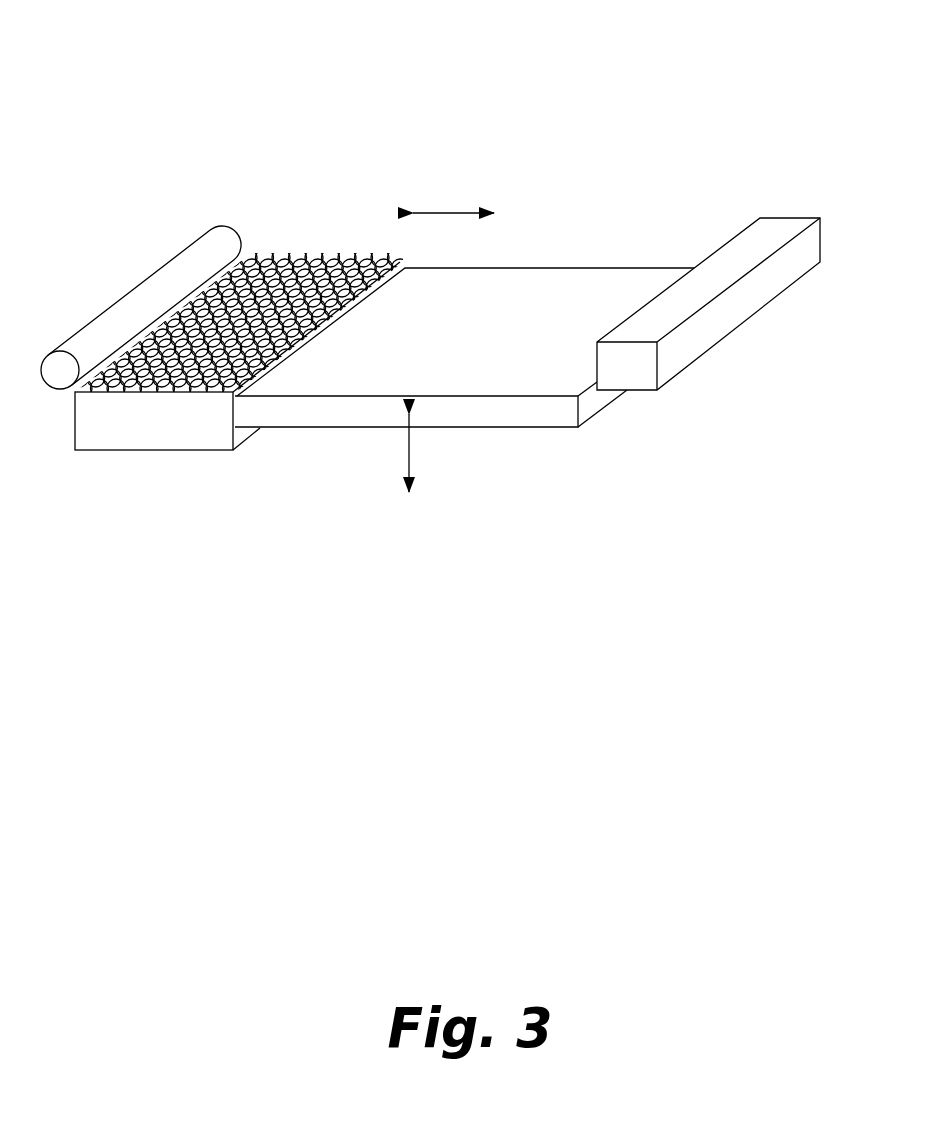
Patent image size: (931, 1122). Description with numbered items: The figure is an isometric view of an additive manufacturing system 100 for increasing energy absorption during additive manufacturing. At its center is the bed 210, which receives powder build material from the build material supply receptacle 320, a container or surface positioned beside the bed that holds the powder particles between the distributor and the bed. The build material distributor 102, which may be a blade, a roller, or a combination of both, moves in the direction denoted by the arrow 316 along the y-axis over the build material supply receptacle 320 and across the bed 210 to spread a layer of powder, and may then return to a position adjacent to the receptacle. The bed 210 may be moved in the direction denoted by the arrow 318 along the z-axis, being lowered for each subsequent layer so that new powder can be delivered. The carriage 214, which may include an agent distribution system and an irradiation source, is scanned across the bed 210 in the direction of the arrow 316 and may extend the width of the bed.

The additive manufacturing system 100 is at (386, 86).
The build material distributor 102 is at (208, 245).
The bed 210 is at (592, 282).
The carriage 214 is at (780, 227).
The arrow 316 is at (460, 213).
The arrow 318 is at (408, 450).
The build material supply receptacle 320 is at (182, 437).